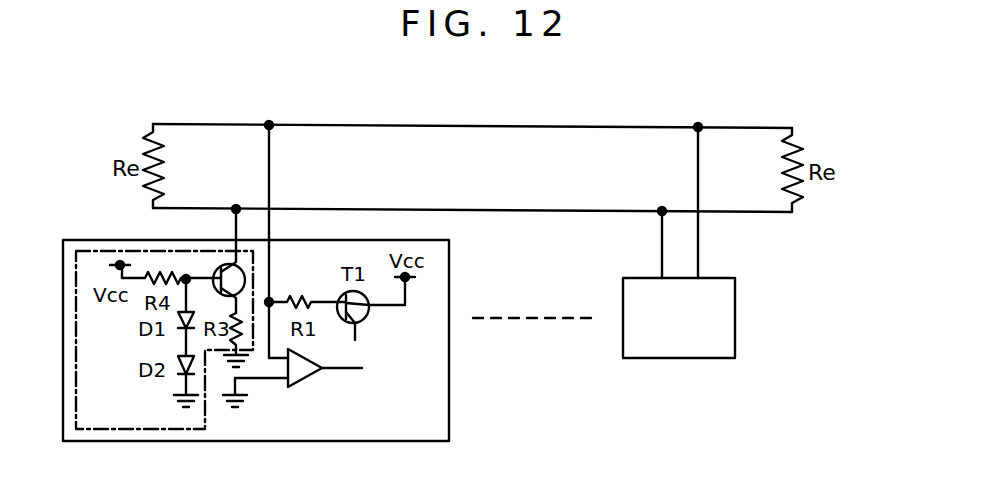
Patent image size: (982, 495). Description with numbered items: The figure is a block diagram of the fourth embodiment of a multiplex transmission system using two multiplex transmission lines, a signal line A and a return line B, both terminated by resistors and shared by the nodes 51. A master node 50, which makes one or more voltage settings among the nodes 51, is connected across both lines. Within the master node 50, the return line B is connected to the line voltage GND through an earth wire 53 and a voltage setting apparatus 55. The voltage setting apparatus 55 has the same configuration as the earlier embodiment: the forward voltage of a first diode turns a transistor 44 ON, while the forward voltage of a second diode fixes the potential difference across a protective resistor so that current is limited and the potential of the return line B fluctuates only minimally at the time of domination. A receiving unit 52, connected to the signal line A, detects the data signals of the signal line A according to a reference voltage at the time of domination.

The signal line A is at (543, 125).
The return line B is at (543, 209).
The transistor 44 is at (250, 278).
The master node 50 is at (449, 410).
The nodes 51 is at (688, 360).
The receiving unit 52 is at (312, 375).
The earth wire 53 is at (236, 218).
The voltage setting apparatus 55 is at (104, 428).